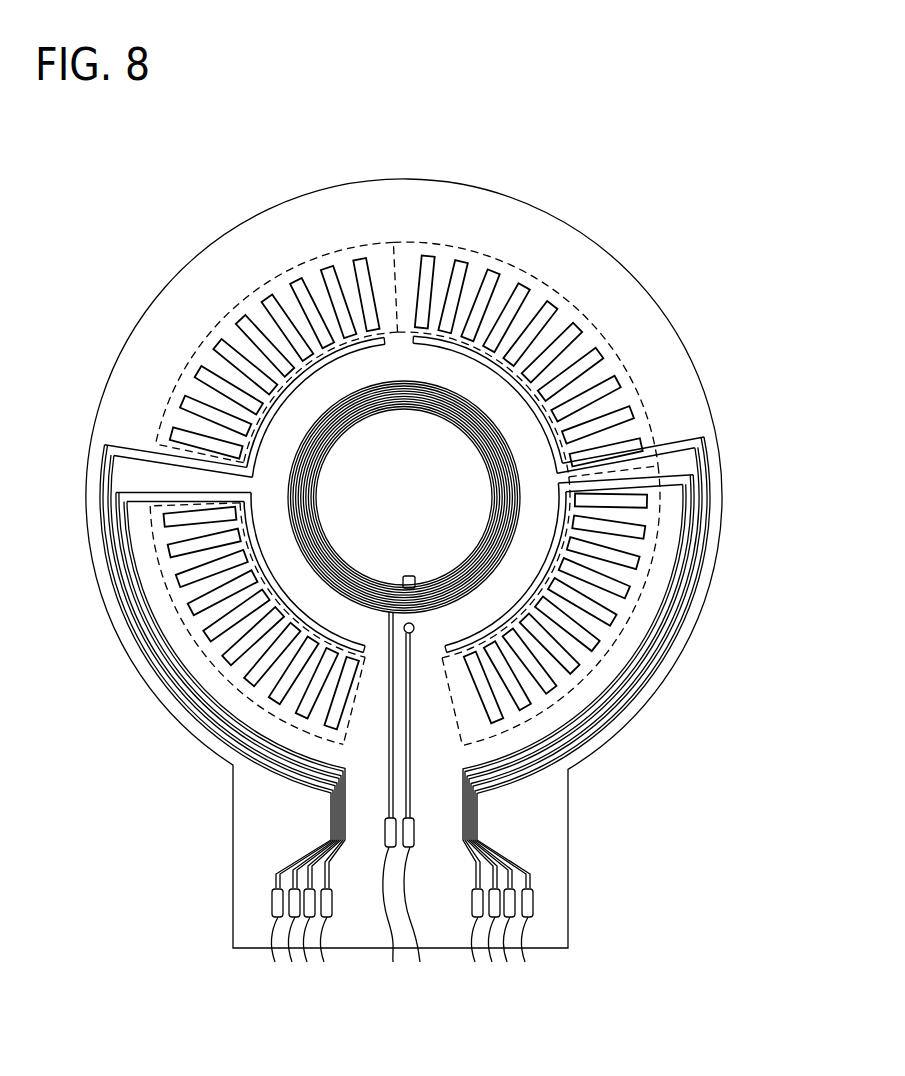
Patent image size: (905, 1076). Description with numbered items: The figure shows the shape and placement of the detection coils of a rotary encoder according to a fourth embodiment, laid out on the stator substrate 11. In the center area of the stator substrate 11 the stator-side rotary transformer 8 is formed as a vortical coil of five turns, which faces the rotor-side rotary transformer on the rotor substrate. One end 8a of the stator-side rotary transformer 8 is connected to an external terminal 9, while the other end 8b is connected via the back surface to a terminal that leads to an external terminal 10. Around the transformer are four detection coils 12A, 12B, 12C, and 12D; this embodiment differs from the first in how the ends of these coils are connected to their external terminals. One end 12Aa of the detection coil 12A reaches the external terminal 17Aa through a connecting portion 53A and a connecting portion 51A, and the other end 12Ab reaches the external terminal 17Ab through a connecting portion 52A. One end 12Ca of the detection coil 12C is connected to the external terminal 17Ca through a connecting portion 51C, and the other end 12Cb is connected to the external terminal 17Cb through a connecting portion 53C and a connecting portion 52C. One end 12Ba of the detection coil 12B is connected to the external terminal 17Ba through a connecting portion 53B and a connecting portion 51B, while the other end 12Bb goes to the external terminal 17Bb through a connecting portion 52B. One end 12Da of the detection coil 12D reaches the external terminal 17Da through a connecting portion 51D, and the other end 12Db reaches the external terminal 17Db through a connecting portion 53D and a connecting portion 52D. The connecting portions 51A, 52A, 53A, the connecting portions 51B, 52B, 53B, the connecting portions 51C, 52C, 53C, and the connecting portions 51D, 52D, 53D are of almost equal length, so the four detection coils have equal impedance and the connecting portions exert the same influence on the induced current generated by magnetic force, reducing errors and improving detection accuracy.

The stator-side rotary transformer 8 is at (490, 462).
The one end of the stator-side rotary transformer 8a is at (414, 628).
The other end of the stator-side rotary transformer 8b is at (409, 576).
The external terminal 9 is at (389, 801).
The external terminal 10 is at (420, 963).
The stator substrate 11 is at (646, 704).
The detection coil 12A is at (206, 619).
The detection coil 12B is at (549, 324).
The detection coil 12C is at (220, 342).
The detection coil 12D is at (562, 592).
The one end of the detection coil 12Aa is at (373, 658).
The other end of the detection coil 12Ab is at (118, 505).
The one end of the detection coil 12Ba is at (415, 336).
The other end of the detection coil 12Bb is at (650, 455).
The one end of the detection coil 12Ca is at (160, 445).
The other end of the detection coil 12Cb is at (384, 337).
The one end of the detection coil 12Da is at (648, 490).
The other end of the detection coil 12Db is at (448, 663).
The connecting portion 51A is at (145, 614).
The connecting portion 52A is at (140, 598).
The connecting portion 51B is at (670, 628).
The connecting portion 52B is at (666, 650).
The connecting portion 51C is at (149, 682).
The connecting portion 52C is at (150, 658).
The connecting portion 51D is at (670, 603).
The connecting portion 52D is at (672, 610).
The connecting portion 53A is at (268, 546).
The connecting portion 53B is at (505, 378).
The connecting portion 53C is at (288, 392).
The connecting portion 53D is at (542, 563).
The external terminal 17Ca is at (255, 939).
The external terminal 17Cb is at (291, 963).
The external terminal 17Aa is at (310, 939).
The external terminal 17Ab is at (325, 963).
The external terminal 17Da is at (462, 939).
The external terminal 17Db is at (493, 963).
The external terminal 17Ba is at (519, 939).
The external terminal 17Bb is at (527, 963).